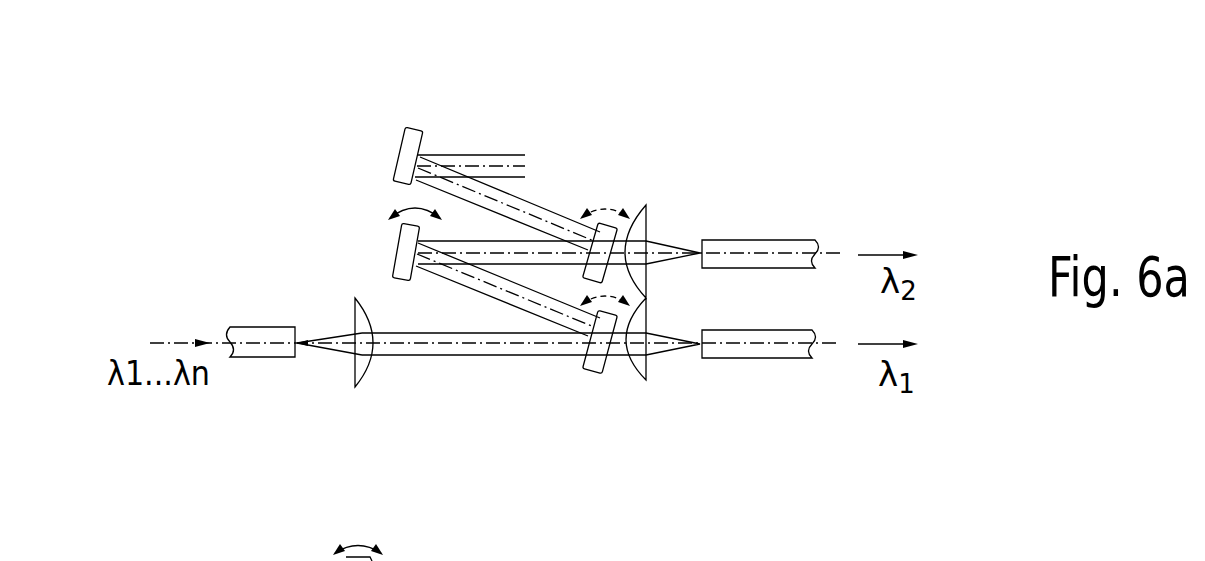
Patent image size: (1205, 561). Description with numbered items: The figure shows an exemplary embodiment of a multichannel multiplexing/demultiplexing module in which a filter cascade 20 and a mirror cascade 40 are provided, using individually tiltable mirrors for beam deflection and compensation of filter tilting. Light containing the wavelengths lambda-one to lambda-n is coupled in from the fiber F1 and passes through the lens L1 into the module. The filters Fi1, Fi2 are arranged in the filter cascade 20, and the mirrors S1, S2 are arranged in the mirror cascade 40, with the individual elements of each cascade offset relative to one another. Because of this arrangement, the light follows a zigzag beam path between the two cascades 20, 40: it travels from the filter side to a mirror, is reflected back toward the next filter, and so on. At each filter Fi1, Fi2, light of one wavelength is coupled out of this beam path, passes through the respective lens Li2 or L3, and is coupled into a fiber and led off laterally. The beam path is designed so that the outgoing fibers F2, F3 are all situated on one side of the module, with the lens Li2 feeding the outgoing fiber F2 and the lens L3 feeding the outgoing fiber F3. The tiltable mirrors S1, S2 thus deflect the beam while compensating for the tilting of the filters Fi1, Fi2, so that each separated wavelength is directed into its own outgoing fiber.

The mirror cascade 40 is at (387, 116).
The filter cascade 20 is at (604, 165).
The mirror S1 is at (390, 244).
The mirror S2 is at (380, 154).
The fiber F1 is at (261, 318).
The outgoing fiber F2 is at (759, 370).
The outgoing fiber F3 is at (760, 231).
The lens L1 is at (361, 368).
The lens L3 is at (647, 229).
The lens Li2 is at (649, 368).
The filter Fi1 is at (594, 360).
The filter Fi2 is at (601, 224).